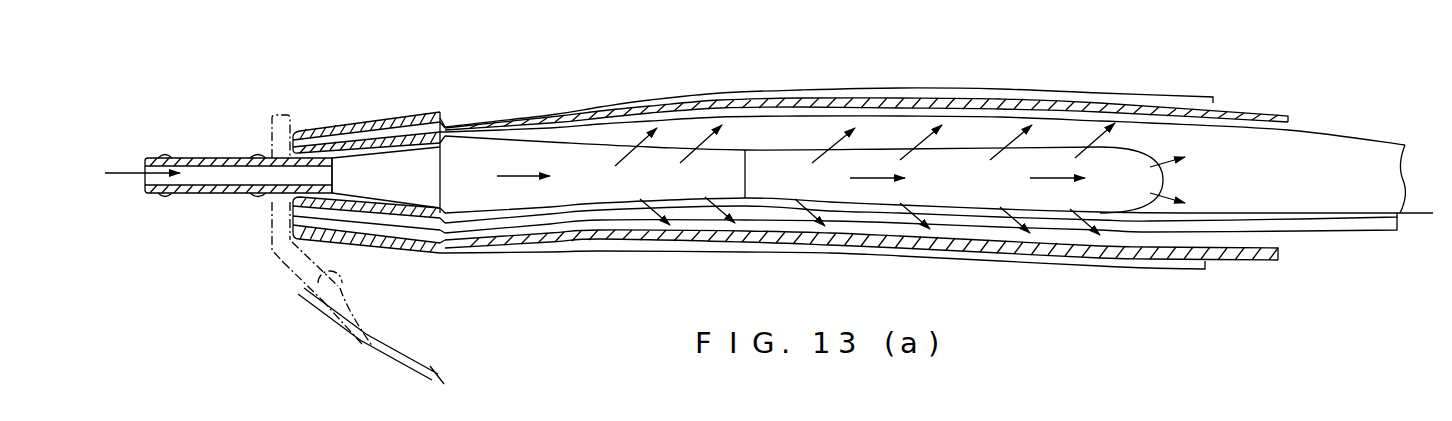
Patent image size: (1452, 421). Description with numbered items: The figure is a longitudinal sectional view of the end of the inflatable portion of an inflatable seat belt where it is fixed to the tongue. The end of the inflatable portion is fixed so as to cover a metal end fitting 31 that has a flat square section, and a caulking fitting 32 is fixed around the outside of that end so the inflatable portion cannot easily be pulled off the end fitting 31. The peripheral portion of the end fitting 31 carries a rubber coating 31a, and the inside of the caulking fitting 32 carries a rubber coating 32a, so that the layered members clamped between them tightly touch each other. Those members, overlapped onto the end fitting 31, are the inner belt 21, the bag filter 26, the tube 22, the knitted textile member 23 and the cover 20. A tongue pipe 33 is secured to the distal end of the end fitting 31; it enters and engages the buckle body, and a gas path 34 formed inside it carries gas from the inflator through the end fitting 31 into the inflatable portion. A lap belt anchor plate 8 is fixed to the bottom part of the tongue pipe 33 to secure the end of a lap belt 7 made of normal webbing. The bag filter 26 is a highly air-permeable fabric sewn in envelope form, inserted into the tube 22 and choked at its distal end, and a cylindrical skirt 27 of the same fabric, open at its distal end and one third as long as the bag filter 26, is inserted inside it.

The lap belt 7 is at (346, 342).
The lap belt anchor plate 8 is at (280, 268).
The cover 20 is at (1208, 93).
The inner belt 21 is at (1418, 216).
The tube 22 is at (1319, 131).
The knitted textile member 23 is at (1259, 109).
The bag filter 26 is at (1148, 238).
The skirt 27 is at (693, 193).
The end fitting 31 is at (425, 150).
The rubber coating 31a is at (447, 220).
The caulking fitting 32 is at (365, 120).
The rubber coating 32a is at (440, 119).
The tongue pipe 33 is at (213, 195).
The gas path 34 is at (216, 155).